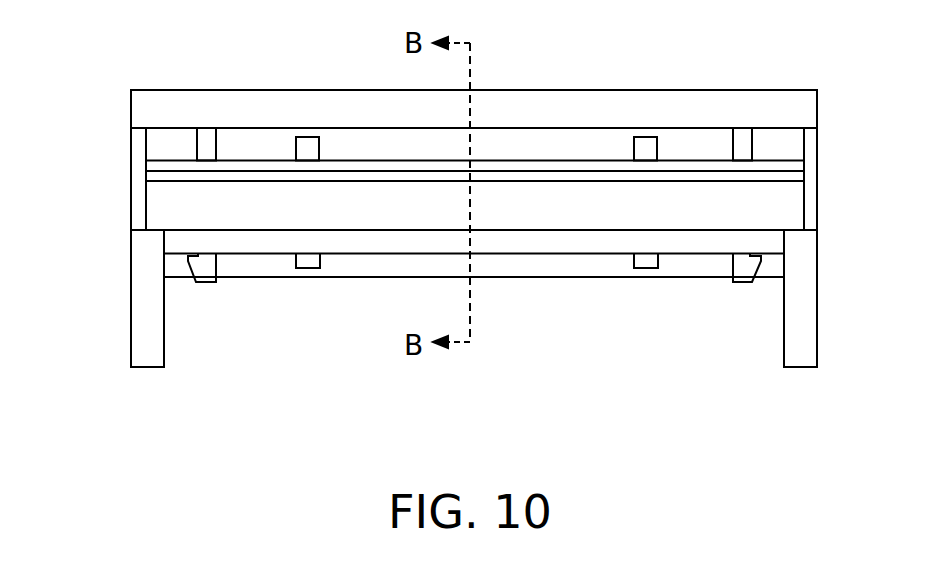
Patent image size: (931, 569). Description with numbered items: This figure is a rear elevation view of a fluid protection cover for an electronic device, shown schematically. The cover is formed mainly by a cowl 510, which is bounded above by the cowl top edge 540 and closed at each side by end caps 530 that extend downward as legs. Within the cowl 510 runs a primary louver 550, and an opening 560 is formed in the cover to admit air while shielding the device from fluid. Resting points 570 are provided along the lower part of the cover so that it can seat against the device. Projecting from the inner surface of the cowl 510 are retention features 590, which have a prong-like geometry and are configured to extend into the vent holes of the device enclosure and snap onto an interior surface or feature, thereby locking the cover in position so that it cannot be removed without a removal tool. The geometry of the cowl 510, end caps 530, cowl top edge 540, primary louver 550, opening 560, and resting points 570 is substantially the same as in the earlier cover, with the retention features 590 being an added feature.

The cowl 510 is at (302, 100).
The end caps 530 is at (131, 305).
The cowl top edge 540 is at (507, 127).
The primary louver 550 is at (535, 203).
The opening 560 is at (612, 142).
The resting points 570 is at (308, 262).
The retention features 590 is at (207, 137).